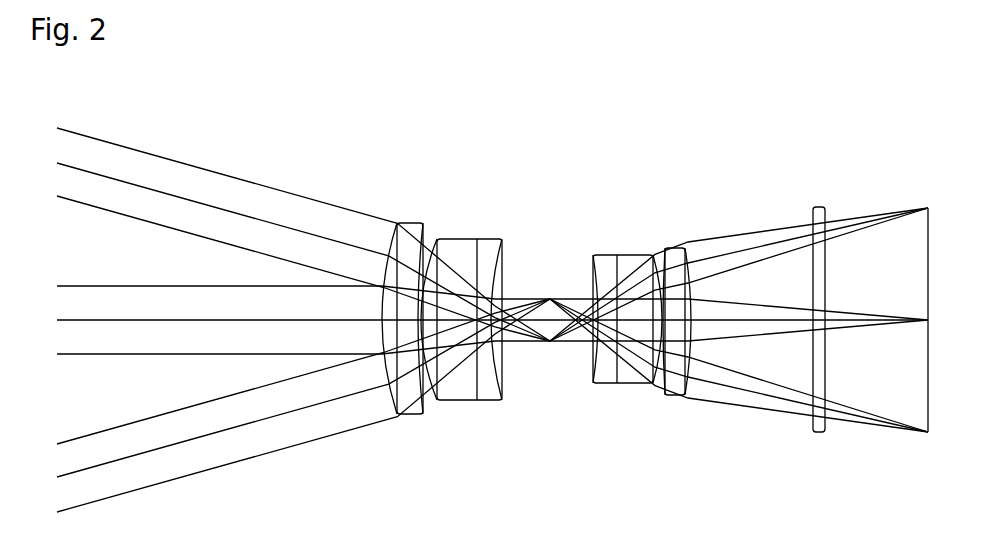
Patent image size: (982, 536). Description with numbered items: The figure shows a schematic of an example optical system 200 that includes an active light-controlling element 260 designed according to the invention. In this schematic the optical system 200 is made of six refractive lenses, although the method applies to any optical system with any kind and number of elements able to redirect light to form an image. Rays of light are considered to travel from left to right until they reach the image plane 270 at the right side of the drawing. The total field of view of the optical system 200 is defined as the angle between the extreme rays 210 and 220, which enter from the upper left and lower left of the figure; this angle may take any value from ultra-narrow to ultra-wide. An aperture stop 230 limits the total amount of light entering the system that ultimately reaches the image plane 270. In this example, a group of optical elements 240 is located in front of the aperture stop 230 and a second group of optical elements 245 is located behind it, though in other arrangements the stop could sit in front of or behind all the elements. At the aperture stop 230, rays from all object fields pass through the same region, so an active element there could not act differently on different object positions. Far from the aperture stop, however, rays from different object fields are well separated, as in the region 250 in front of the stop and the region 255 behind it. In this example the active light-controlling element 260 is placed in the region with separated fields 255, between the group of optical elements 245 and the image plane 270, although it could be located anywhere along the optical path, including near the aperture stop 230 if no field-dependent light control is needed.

The optical system 200 is at (492, 201).
The extreme ray 210 is at (290, 234).
The extreme ray 220 is at (290, 405).
The aperture stop 230 is at (591, 302).
The group of optical elements 240 is at (442, 308).
The group of optical elements 245 is at (642, 304).
The region with separated fields 250 is at (276, 254).
The region with separated fields 255 is at (739, 303).
The active light-controlling element 260 is at (821, 331).
The image plane 270 is at (933, 308).